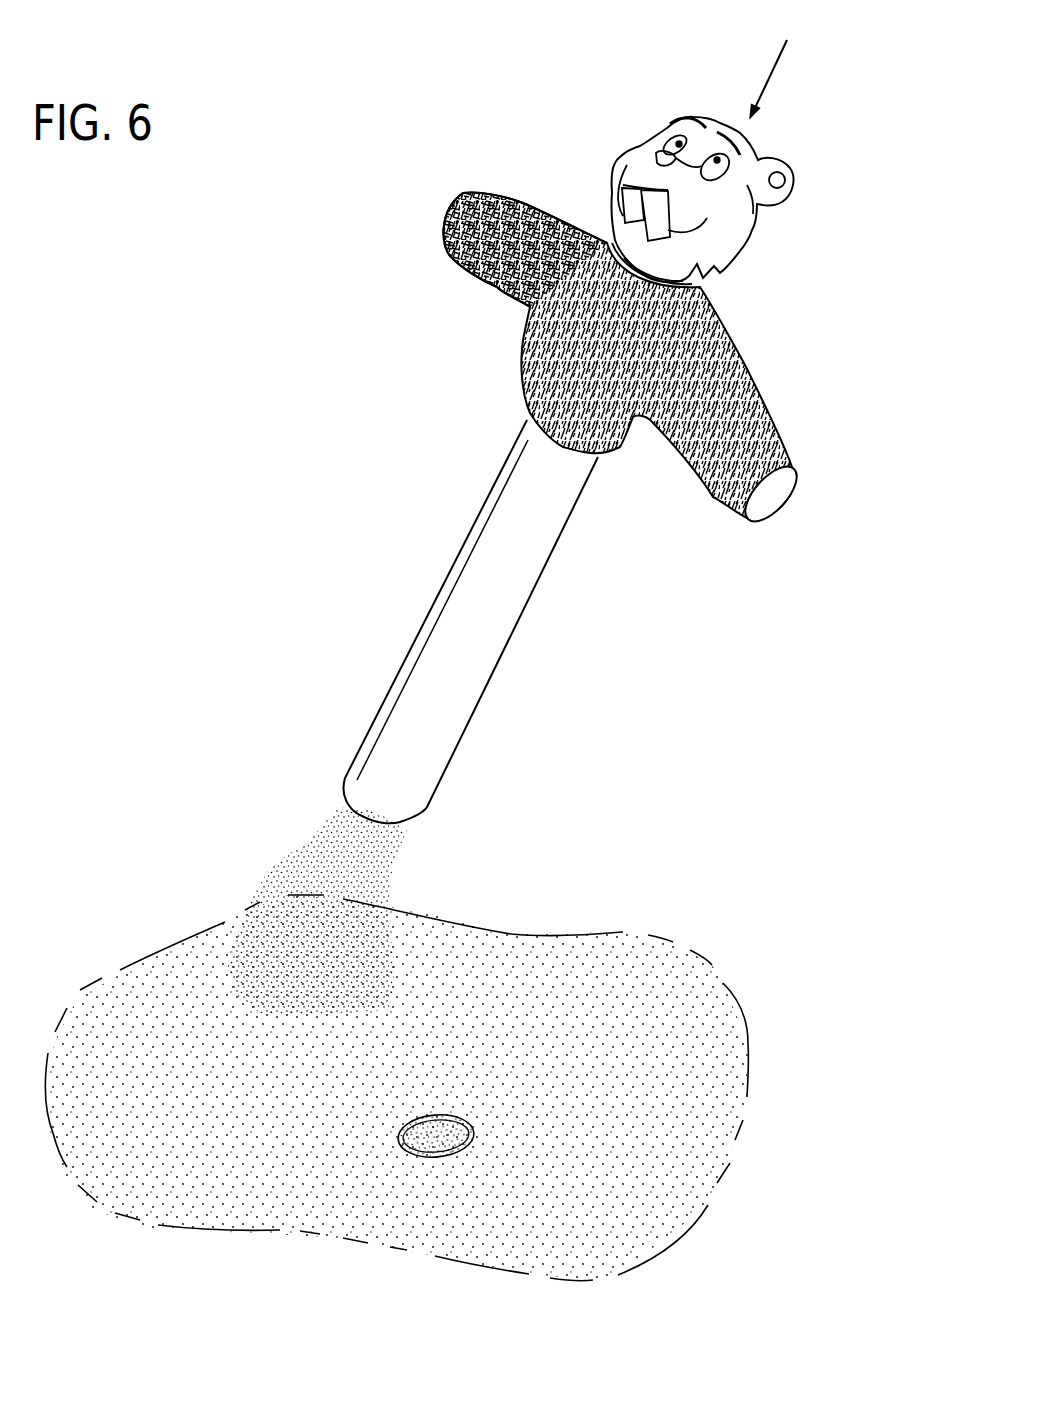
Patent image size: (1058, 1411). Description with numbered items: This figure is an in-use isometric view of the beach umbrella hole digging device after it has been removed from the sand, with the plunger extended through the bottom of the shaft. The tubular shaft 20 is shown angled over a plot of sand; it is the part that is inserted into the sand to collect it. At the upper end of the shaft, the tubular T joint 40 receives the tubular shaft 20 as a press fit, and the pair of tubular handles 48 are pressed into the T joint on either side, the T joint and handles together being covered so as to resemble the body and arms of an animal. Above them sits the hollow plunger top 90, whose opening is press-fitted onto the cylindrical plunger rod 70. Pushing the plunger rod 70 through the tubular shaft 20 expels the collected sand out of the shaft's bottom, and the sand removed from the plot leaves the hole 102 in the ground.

The hollow plunger top 90 is at (609, 130).
The tubular T joint 40 is at (703, 329).
The pair of tubular handles 48 is at (467, 282).
The tubular shaft 20 is at (413, 605).
The cylindrical plunger rod 70 is at (330, 823).
The hole 102 is at (453, 1098).